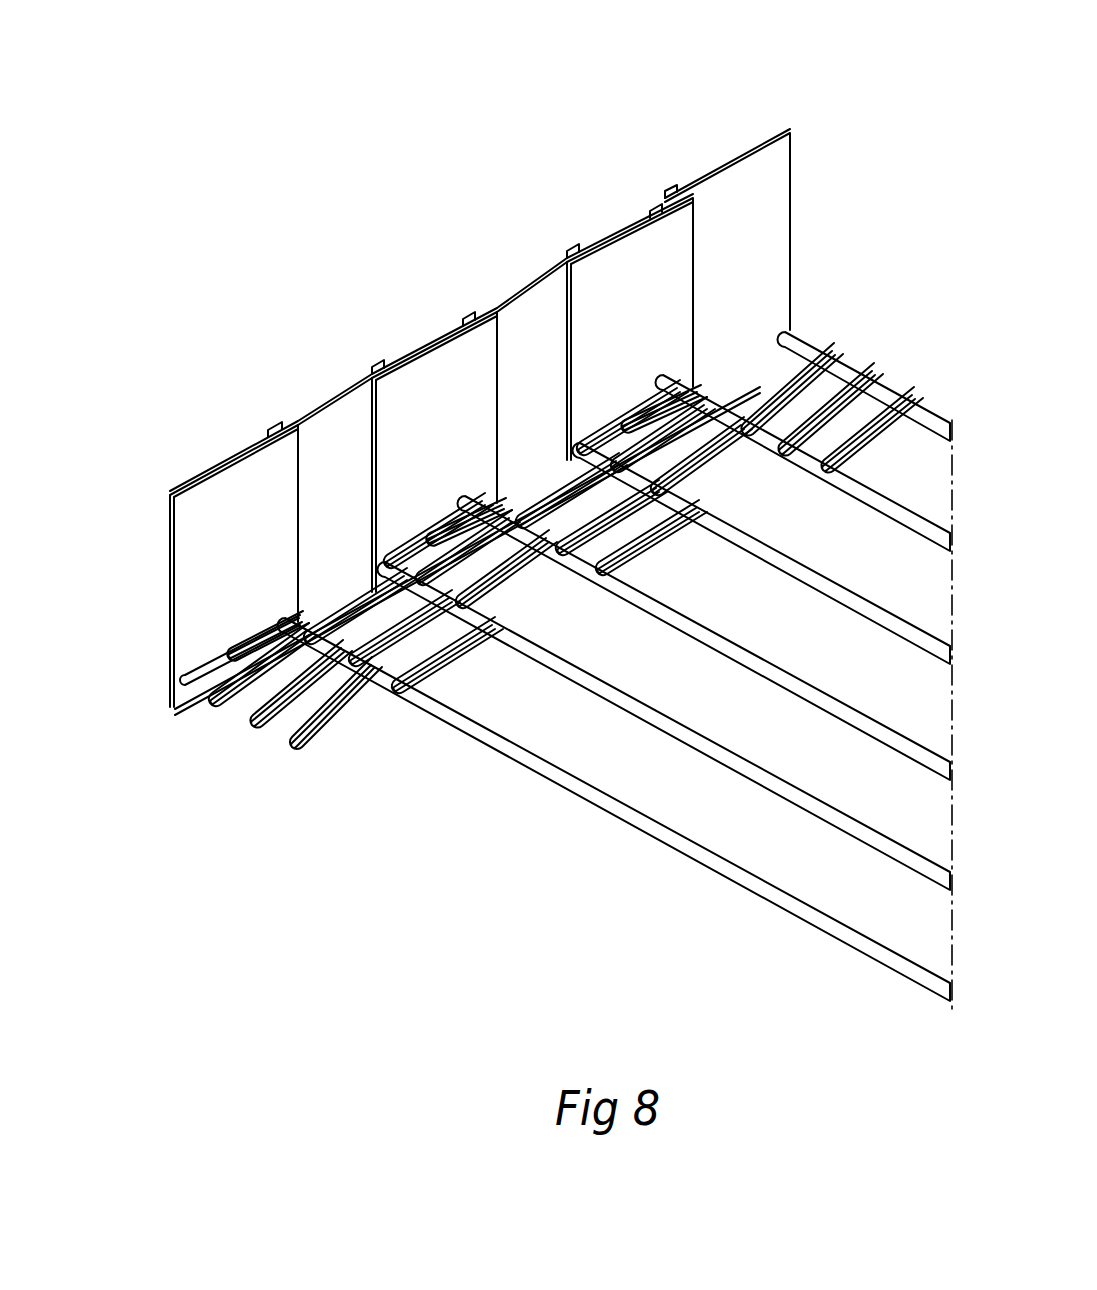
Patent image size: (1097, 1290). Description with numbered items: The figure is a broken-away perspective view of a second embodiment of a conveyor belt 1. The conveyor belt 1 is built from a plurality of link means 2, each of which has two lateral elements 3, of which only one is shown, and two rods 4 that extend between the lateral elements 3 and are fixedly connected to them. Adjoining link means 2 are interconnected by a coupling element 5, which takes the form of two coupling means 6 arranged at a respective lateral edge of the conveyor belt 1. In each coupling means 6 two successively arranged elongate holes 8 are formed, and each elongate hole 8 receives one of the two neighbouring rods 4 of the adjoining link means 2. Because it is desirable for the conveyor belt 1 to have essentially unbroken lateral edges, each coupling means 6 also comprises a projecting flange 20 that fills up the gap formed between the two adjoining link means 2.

The conveyor belt 1 is at (317, 237).
The link means 2 is at (515, 275).
The lateral element 3 is at (548, 298).
The rod 4 is at (773, 561).
The coupling element 5 is at (203, 637).
The coupling means 6 is at (187, 662).
The elongate hole 8 is at (188, 684).
The projecting flange 20 is at (200, 583).